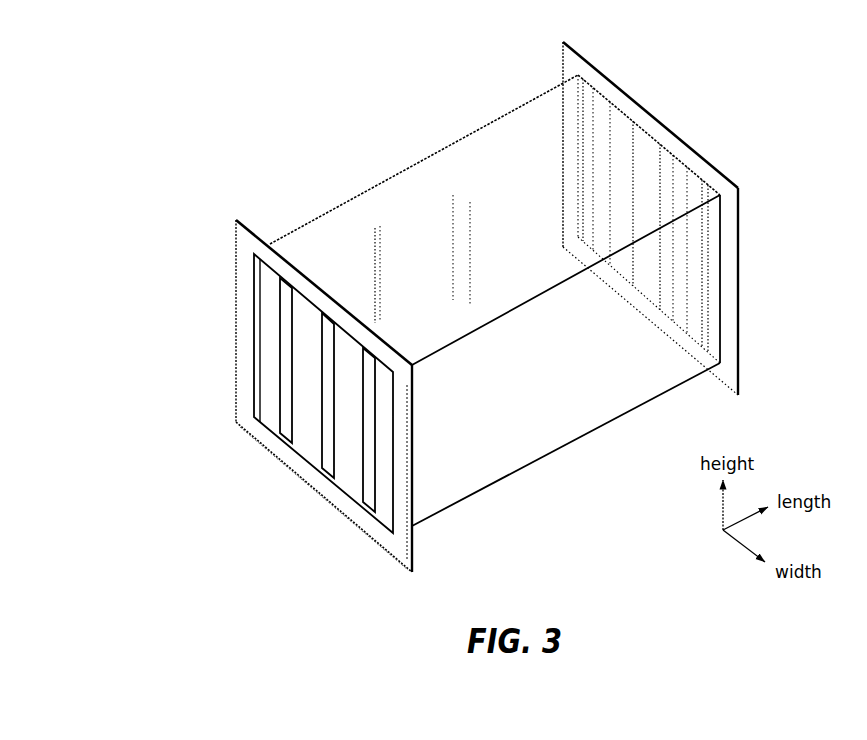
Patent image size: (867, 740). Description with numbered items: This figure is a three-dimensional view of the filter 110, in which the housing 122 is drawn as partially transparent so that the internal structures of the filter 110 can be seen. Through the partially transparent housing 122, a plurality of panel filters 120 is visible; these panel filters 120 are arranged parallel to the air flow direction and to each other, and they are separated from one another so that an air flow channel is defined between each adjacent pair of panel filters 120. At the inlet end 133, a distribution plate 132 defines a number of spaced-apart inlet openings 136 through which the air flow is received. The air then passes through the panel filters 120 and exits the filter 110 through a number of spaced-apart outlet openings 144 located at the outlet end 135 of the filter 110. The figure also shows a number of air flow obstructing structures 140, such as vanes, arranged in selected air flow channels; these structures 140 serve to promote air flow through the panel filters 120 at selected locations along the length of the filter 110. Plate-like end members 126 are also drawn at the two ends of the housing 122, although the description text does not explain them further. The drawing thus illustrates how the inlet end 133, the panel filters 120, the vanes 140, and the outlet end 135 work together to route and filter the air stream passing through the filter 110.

The filter 110 is at (238, 155).
The panel filters 120 is at (487, 183).
The housing 122 is at (572, 427).
The flange 126 is at (245, 248).
The distribution plate 132 is at (313, 363).
The inlet end 133 is at (208, 470).
The outlet end 135 is at (752, 152).
The inlet openings 136 is at (288, 390).
The air flow obstructing structures 140 is at (312, 260).
The outlet openings 144 is at (708, 227).